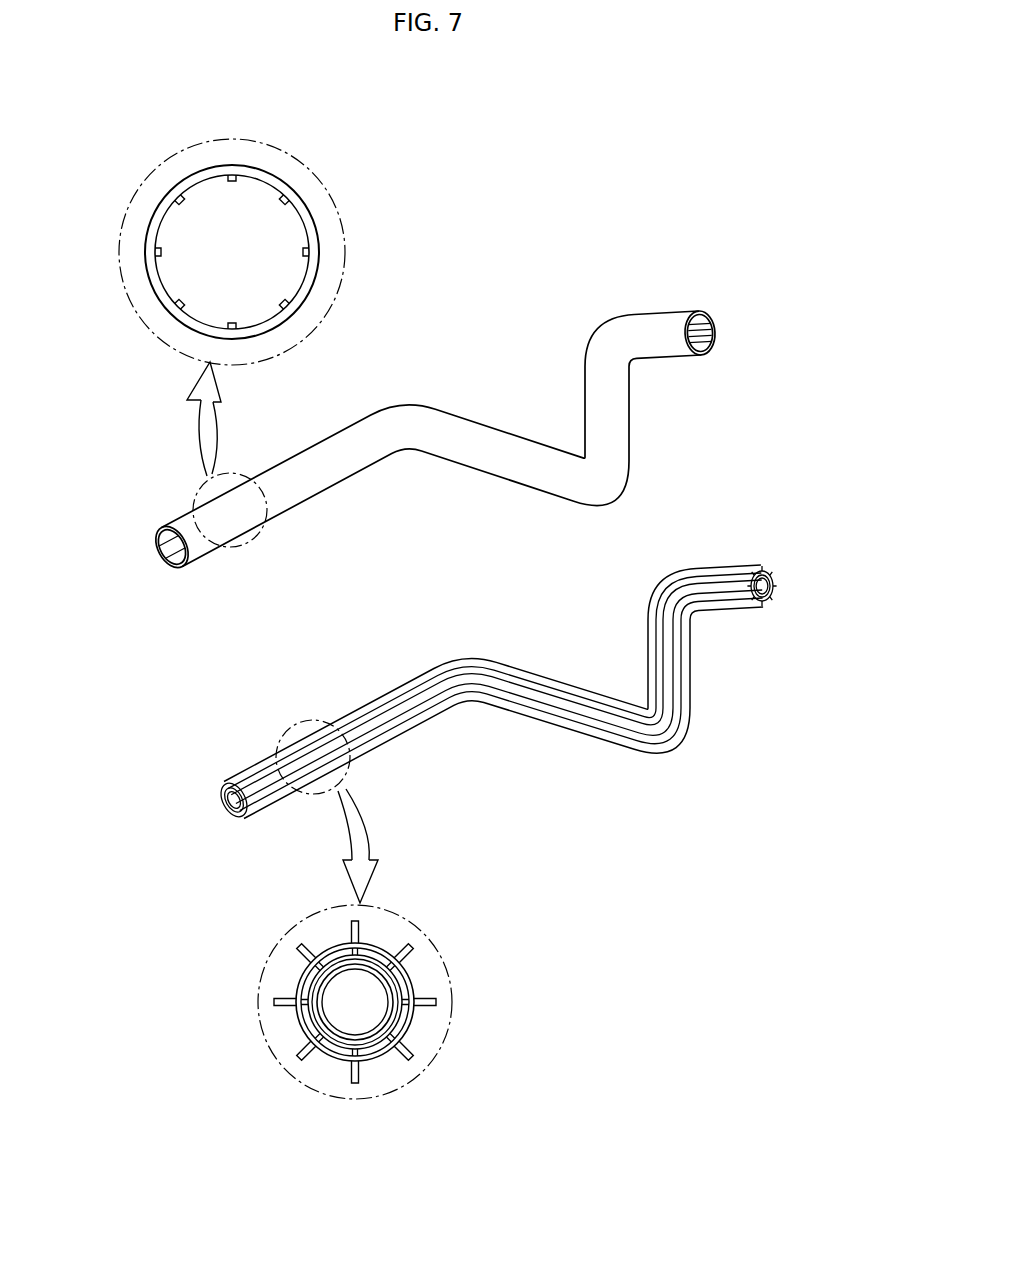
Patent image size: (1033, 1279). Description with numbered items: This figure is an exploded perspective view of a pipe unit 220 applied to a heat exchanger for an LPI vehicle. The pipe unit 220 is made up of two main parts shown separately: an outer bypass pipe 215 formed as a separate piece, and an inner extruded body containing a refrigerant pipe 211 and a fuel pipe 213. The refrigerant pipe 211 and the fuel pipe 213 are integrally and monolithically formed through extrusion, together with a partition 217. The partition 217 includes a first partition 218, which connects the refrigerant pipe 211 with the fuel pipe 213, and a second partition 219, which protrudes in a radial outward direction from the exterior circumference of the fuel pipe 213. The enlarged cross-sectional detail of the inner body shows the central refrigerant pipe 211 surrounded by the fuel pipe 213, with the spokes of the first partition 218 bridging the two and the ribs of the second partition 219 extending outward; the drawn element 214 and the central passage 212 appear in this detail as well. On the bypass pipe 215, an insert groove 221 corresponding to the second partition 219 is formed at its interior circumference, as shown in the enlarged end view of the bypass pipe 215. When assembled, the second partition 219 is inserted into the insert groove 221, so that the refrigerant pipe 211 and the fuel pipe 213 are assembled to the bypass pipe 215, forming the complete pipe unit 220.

The pipe unit 220 is at (528, 236).
The bypass pipe 215 is at (256, 172).
The insert groove 221 is at (183, 202).
The partition 217 is at (528, 1045).
The second partition 219 is at (558, 703).
The fuel pipe 213 is at (584, 723).
The intermediate ring 214 is at (292, 985).
The first partition 218 is at (415, 1021).
The refrigerant pipe 211 is at (227, 808).
The inner passage 212 is at (345, 1016).